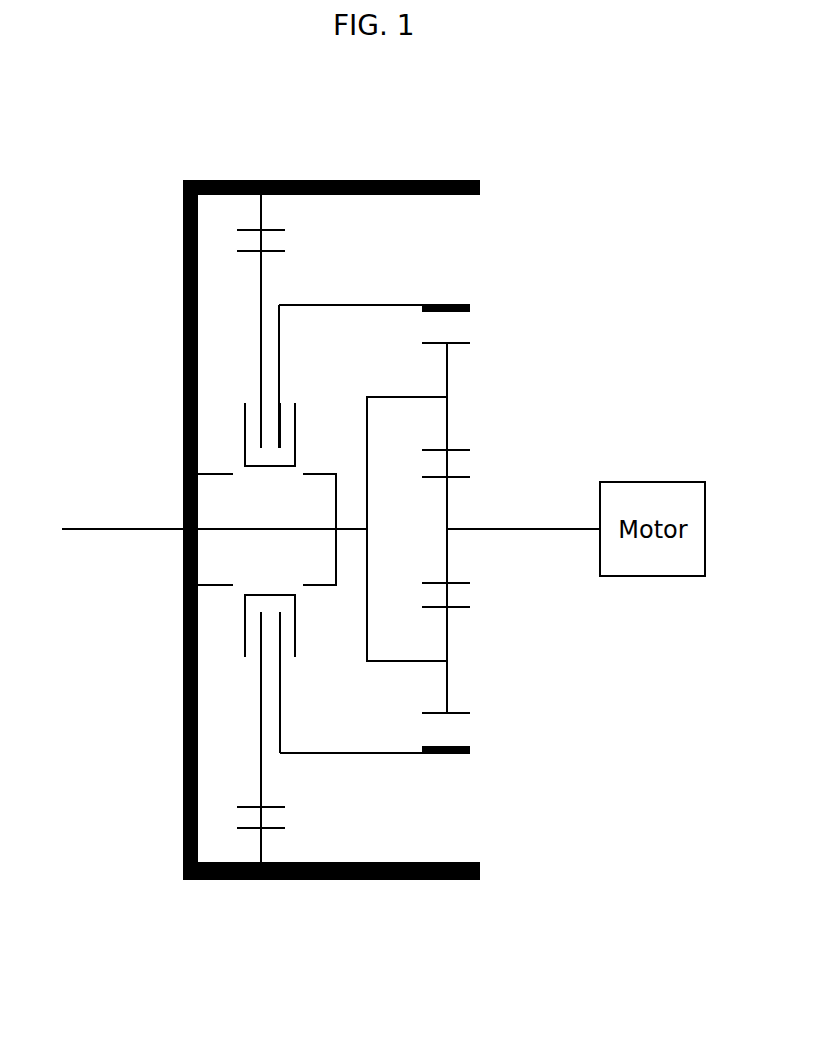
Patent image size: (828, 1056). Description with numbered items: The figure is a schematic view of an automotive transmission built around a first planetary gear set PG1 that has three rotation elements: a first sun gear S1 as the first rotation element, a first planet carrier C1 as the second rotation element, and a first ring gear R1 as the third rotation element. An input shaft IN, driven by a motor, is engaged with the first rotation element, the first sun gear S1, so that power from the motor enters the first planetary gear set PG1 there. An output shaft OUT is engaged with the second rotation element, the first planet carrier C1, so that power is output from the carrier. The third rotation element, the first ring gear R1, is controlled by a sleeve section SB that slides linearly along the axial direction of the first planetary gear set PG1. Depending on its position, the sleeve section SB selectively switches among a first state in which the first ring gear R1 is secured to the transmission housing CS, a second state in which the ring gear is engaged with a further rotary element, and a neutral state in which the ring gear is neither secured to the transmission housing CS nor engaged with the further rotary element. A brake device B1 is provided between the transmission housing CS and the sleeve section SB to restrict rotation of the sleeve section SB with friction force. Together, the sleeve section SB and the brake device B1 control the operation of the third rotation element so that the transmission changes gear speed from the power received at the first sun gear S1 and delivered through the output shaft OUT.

The transmission housing CS is at (428, 179).
The first planetary gear set PG1 is at (480, 301).
The first sun gear S1 is at (467, 583).
The first planet carrier C1 is at (405, 661).
The first ring gear R1 is at (470, 750).
The input shaft IN is at (545, 528).
The output shaft OUT is at (102, 531).
The sleeve section SB is at (265, 467).
The brake device B1 is at (300, 817).